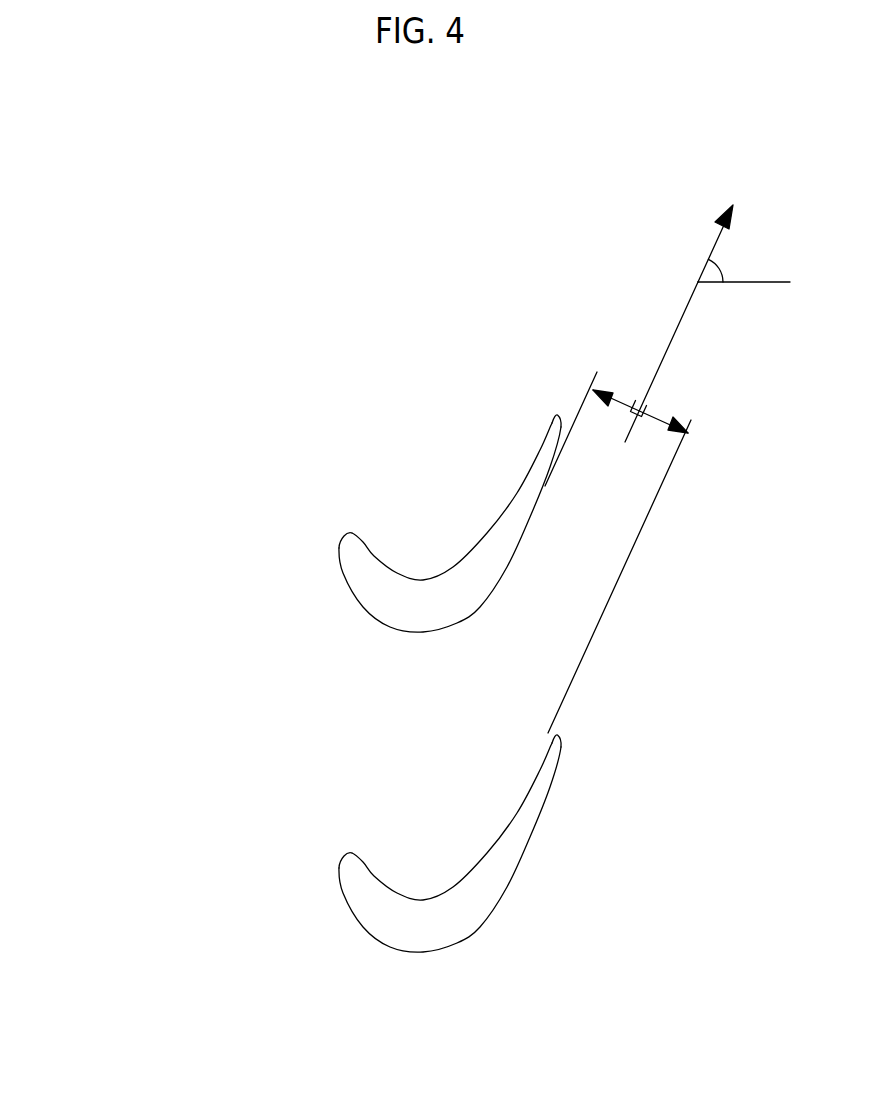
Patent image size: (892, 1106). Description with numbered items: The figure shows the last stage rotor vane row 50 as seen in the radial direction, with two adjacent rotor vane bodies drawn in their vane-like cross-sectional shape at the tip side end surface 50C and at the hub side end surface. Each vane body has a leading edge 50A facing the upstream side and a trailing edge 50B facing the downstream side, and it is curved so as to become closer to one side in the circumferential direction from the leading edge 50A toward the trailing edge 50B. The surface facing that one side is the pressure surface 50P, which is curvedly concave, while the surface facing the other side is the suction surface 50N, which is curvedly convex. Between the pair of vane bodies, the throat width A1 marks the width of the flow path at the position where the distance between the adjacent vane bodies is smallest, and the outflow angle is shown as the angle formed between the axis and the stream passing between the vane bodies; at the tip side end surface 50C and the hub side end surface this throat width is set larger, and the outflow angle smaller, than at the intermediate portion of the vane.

The last stage rotor vane row 50 is at (241, 590).
The leading edge 50A is at (337, 537).
The trailing edge 50B is at (558, 413).
The tip side end surface 50C is at (400, 610).
The pressure surface 50P is at (453, 563).
The suction surface 50N is at (480, 610).
The throat width A1 is at (653, 408).